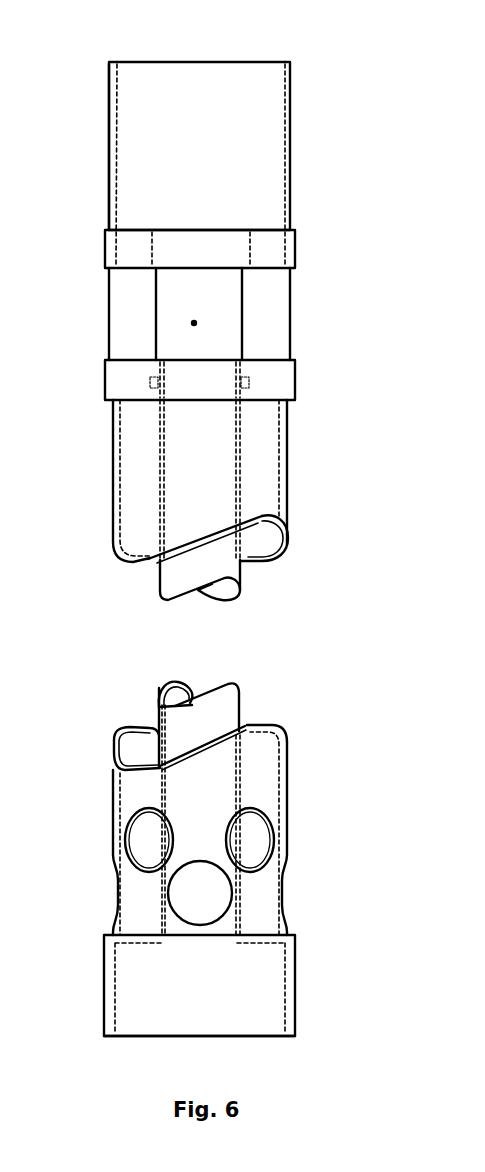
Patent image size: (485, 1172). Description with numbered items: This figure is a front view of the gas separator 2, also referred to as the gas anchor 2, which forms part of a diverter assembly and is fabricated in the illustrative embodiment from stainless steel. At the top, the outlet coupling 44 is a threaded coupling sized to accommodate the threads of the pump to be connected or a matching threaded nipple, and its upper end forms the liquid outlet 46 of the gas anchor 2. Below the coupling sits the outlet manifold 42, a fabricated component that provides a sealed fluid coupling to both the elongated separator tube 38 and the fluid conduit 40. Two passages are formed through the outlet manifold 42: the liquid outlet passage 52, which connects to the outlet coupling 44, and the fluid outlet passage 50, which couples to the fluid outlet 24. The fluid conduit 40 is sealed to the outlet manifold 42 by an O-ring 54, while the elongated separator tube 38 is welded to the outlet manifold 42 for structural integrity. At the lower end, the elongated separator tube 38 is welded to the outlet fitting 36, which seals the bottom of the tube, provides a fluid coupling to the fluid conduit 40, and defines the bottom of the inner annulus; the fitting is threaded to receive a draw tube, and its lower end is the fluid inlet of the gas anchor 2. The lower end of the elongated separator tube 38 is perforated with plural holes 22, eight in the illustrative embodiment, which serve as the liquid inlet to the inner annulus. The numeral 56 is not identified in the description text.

The gas separator 2 is at (309, 1098).
The holes 22 is at (168, 892).
The fluid outlet 24 is at (108, 327).
The outlet fitting 36 is at (104, 971).
The elongated separator tube 38 is at (113, 458).
The fluid conduit 40 is at (160, 588).
The outlet manifold 42 is at (105, 263).
The outlet coupling 44 is at (108, 155).
The liquid outlet 46 is at (187, 61).
The fluid outlet passage 50 is at (194, 322).
The liquid outlet passage 52 is at (200, 242).
The O-ring 54 is at (150, 386).
The bottom surface 56 is at (200, 1036).